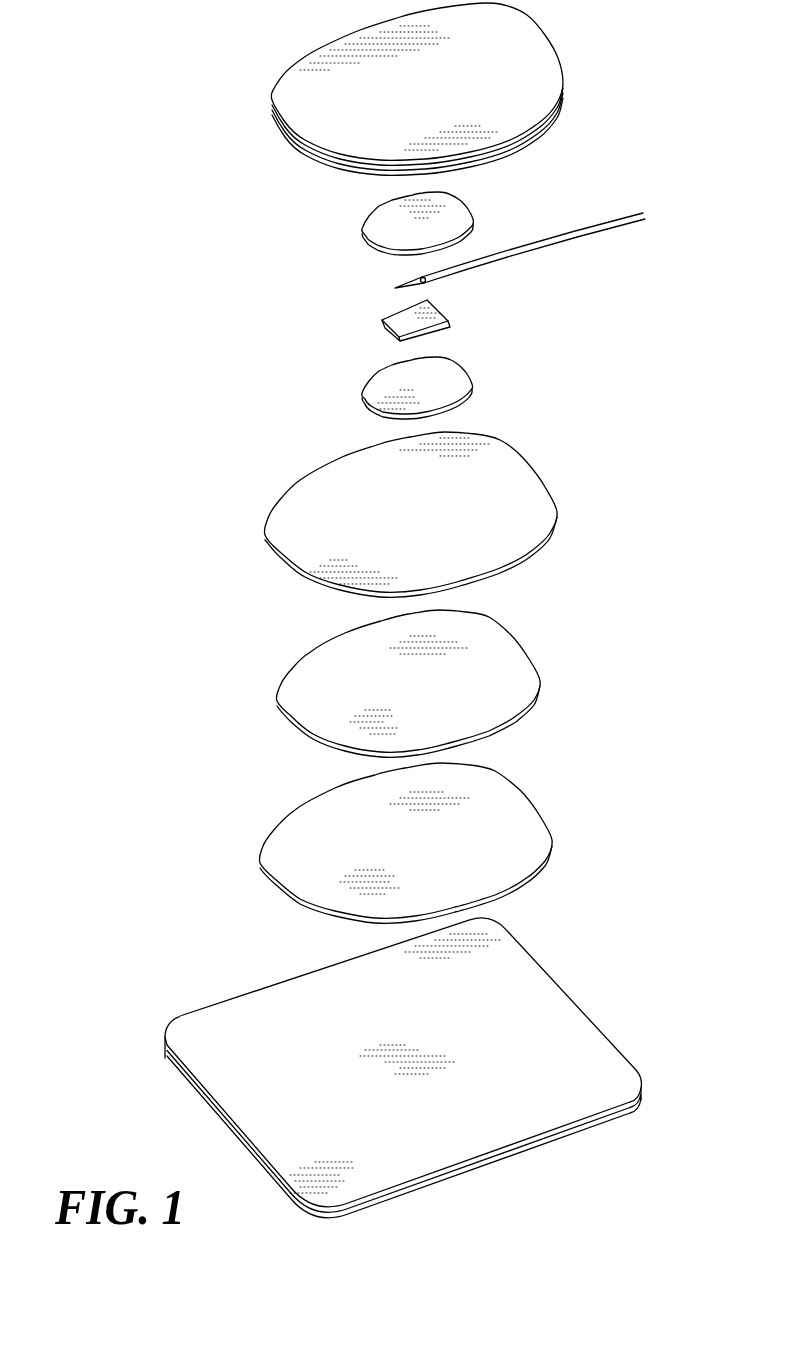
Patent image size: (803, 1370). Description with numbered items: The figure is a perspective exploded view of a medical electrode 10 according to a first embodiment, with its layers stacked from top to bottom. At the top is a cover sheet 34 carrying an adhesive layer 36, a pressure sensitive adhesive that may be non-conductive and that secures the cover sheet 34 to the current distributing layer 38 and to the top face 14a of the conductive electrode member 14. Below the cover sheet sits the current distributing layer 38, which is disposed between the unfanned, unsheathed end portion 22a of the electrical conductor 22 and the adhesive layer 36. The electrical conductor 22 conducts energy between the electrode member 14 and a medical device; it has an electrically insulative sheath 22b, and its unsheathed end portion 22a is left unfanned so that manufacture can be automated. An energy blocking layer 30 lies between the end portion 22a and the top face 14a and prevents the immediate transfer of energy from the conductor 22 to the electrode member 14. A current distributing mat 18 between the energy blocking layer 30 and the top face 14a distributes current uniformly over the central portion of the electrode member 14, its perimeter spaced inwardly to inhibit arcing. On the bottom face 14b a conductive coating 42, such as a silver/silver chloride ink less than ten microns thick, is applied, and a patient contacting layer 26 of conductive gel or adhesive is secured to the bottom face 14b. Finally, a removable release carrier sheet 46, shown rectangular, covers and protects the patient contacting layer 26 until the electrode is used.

The medical electrode 10 is at (117, 97).
The cover sheet 34 is at (270, 95).
The adhesive layer 36 is at (545, 130).
The current distributing layer 38 is at (393, 226).
The electrical conductor 22 is at (479, 256).
The unfanned, unsheathed end portion 22a is at (398, 287).
The electrically insulative sheath 22b is at (503, 258).
The energy blocking layer 30 is at (408, 317).
The current distributing mat 18 is at (400, 388).
The conductive electrode member 14 is at (410, 514).
The top face 14a is at (439, 524).
The bottom face 14b is at (540, 556).
The conductive coating 42 is at (282, 678).
The patient contacting layer 26 is at (268, 835).
The release carrier sheet 46 is at (178, 1015).